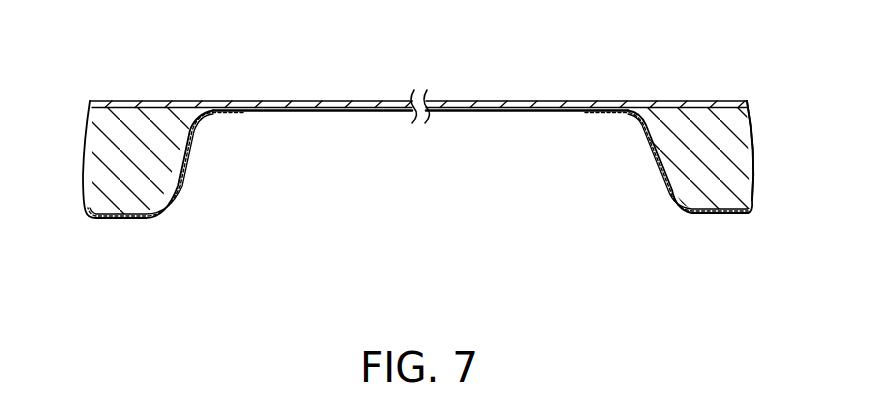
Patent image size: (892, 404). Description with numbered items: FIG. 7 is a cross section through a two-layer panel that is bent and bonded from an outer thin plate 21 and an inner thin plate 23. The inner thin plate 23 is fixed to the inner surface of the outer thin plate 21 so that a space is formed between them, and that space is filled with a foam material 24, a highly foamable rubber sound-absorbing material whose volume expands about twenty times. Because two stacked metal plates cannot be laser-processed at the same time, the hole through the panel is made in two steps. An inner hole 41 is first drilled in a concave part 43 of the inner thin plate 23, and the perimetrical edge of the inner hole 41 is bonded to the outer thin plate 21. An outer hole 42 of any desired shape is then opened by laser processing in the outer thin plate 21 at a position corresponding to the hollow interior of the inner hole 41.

The outer thin plate 21 is at (686, 103).
The inner thin plate 23 is at (704, 214).
The foam material 24 is at (735, 155).
The inner hole 41 is at (585, 110).
The outer hole 42 is at (536, 105).
The concave part 43 is at (614, 110).